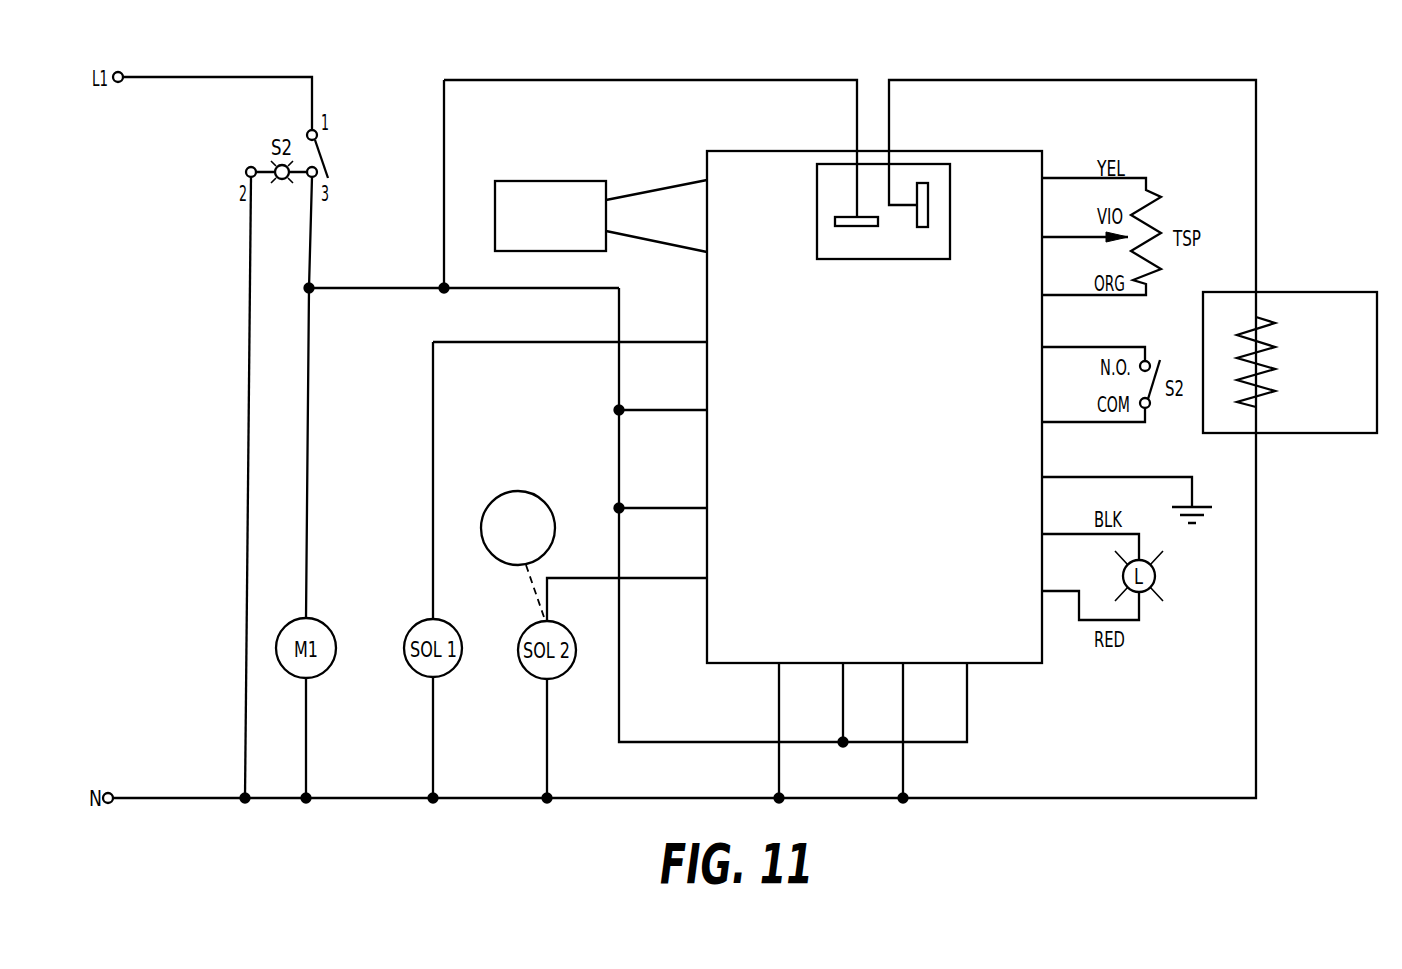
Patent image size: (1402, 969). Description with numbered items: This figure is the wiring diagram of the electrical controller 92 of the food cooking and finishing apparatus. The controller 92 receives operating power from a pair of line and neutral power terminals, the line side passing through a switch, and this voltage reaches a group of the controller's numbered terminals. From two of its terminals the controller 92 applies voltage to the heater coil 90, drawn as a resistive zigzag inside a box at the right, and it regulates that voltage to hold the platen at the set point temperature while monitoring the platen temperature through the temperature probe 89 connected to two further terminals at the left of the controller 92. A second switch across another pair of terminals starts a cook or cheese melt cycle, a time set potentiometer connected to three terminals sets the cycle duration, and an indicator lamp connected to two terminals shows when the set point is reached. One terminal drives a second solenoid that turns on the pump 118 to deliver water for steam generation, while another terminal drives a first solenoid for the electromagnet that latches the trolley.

The temperature probe 89 is at (540, 181).
The electrical controller 92 is at (974, 151).
The heater coil 90 is at (1322, 292).
The pump 118 is at (518, 491).